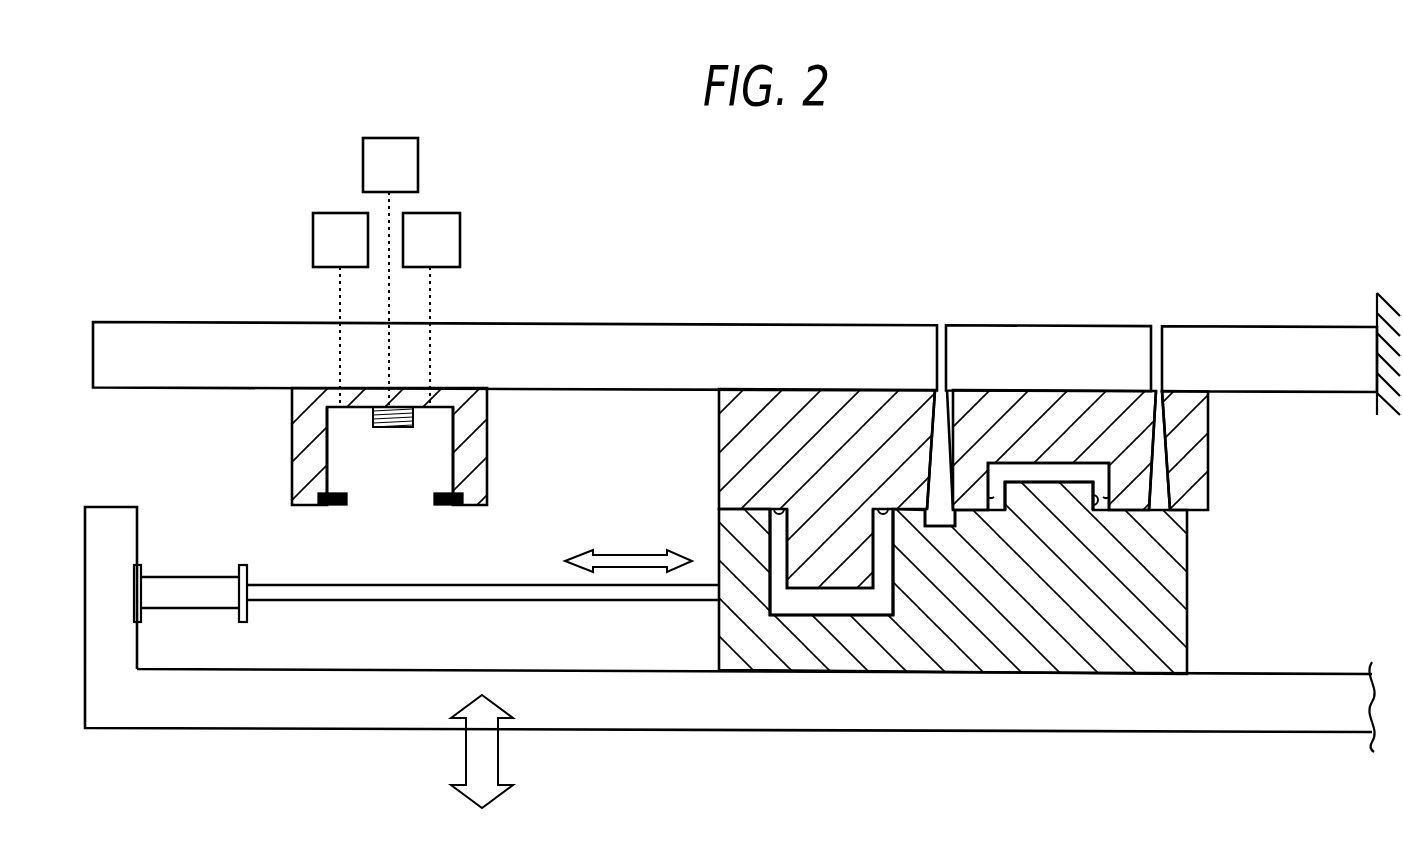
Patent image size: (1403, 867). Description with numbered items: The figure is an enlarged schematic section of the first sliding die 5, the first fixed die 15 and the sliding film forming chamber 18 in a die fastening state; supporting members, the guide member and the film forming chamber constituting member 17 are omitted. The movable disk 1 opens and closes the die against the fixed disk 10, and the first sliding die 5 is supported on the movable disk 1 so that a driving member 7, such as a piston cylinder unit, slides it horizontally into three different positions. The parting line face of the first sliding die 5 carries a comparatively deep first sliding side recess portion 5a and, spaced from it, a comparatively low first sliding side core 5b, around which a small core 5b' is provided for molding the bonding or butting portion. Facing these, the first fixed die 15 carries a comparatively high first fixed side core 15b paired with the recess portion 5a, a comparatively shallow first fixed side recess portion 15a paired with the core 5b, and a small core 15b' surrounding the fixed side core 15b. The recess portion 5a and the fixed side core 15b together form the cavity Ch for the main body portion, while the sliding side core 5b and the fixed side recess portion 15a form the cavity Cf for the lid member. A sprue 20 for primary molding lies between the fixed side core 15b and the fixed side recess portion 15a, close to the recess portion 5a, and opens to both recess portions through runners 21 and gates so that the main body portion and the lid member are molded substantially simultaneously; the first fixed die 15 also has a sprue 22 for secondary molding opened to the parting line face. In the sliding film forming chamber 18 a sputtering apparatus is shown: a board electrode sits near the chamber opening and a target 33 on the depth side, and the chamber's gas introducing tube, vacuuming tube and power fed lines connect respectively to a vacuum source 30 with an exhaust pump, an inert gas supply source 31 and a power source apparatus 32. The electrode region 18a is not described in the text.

The movable disk 1 is at (623, 695).
The first sliding die 5 is at (1017, 575).
The first sliding side recess portion 5a is at (793, 607).
The first sliding side core 5b is at (1049, 652).
The small core 5b' is at (1112, 647).
The driving member 7 is at (180, 607).
The fixed disk 10 is at (712, 353).
The first fixed die 15 is at (880, 413).
The first fixed side recess portion 15a is at (1078, 465).
The first fixed side core 15b is at (830, 421).
The small core 15b' is at (825, 442).
The film forming chamber constituting member 17 is at (307, 413).
The sliding film forming chamber 18 is at (413, 468).
The electrode pads 18a is at (450, 507).
The sprue for primary molding 20 is at (960, 460).
The runners 21 is at (925, 527).
The sprue for secondary molding 22 is at (1175, 447).
The vacuum source 30 is at (313, 240).
The inert gas supply source 31 is at (460, 240).
The power source apparatus 32 is at (418, 163).
The target 33 is at (392, 428).
The cavity for molding the main body portion Ch is at (833, 603).
The cavity Cf is at (1035, 470).